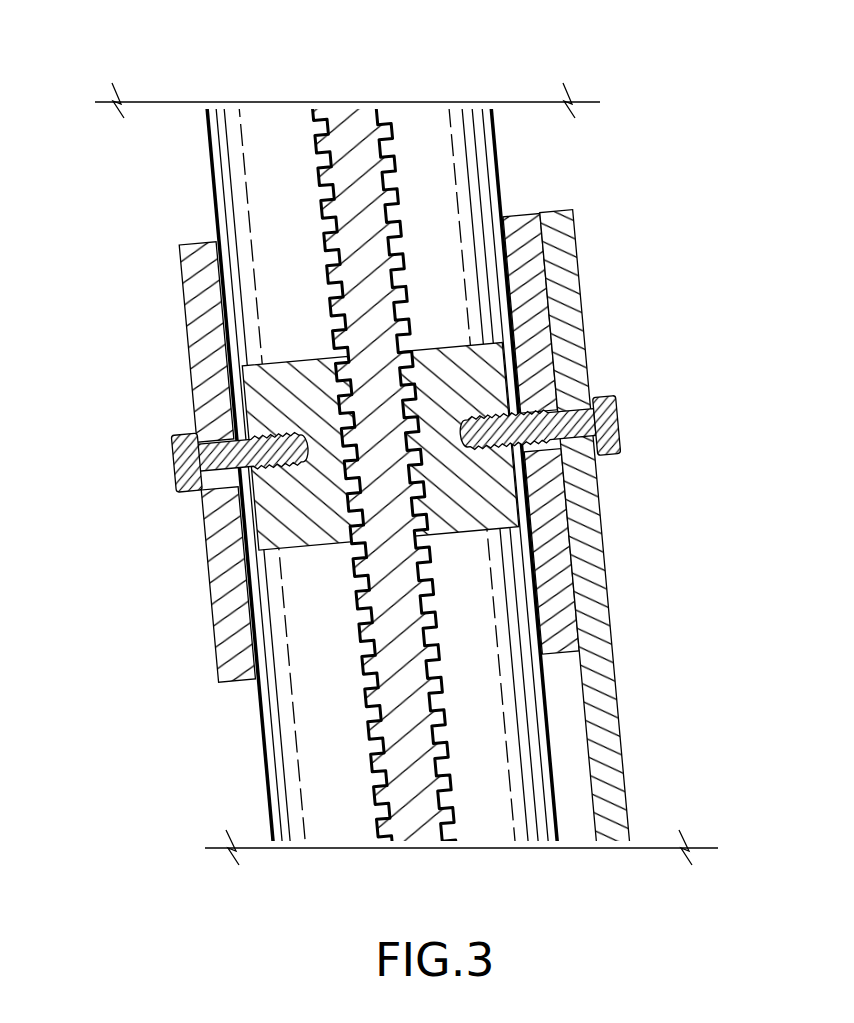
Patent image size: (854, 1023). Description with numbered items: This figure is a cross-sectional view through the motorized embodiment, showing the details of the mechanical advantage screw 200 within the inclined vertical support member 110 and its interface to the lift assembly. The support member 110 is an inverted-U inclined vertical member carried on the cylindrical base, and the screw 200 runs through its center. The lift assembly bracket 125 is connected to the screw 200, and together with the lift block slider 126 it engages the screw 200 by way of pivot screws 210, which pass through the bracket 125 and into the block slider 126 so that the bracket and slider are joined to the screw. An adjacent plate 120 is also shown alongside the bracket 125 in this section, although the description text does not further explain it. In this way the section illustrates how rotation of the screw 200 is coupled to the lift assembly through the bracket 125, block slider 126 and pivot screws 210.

The inclined vertical support member 110 is at (463, 118).
The plate 120 is at (627, 747).
The lift assembly bracket 125 is at (530, 215).
The lift block slider 126 is at (275, 518).
The mechanical advantage screw 200 is at (352, 120).
The pivot screws 210 is at (620, 400).